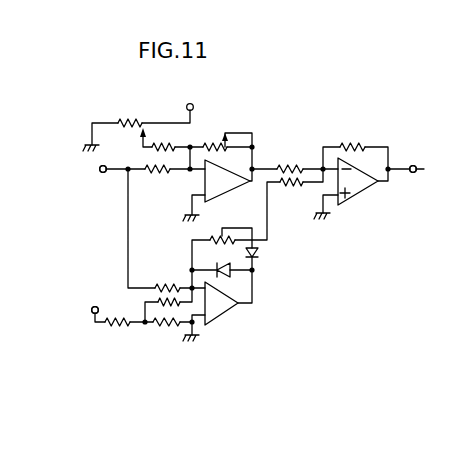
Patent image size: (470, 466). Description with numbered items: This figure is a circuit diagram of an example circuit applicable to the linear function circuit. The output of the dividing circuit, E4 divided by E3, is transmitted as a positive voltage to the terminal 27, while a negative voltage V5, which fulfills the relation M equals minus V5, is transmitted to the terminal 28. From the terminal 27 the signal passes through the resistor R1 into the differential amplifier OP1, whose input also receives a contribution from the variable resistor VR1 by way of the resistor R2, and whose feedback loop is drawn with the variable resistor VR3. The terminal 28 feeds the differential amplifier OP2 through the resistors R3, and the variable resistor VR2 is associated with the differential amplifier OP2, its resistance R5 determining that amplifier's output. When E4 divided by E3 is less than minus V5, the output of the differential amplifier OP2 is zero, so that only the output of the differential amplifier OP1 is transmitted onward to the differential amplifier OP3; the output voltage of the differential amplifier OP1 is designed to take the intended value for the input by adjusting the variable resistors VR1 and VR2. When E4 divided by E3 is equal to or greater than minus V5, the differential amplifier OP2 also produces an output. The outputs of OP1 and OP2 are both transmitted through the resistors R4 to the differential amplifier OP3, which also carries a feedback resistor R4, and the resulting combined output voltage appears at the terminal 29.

The terminal 27 is at (88, 171).
The terminal 28 is at (94, 306).
The terminal 29 is at (430, 171).
The variable resistor VR1 is at (123, 111).
The variable resistor VR2 is at (213, 237).
The variable resistor VR3 is at (212, 143).
The resistor R1 is at (157, 181).
The resistor R2 is at (178, 145).
The resistor R3 is at (171, 286).
The resistor R4 is at (352, 139).
The differential amplifier OP1 is at (230, 188).
The differential amplifier OP2 is at (225, 314).
The differential amplifier OP3 is at (360, 194).